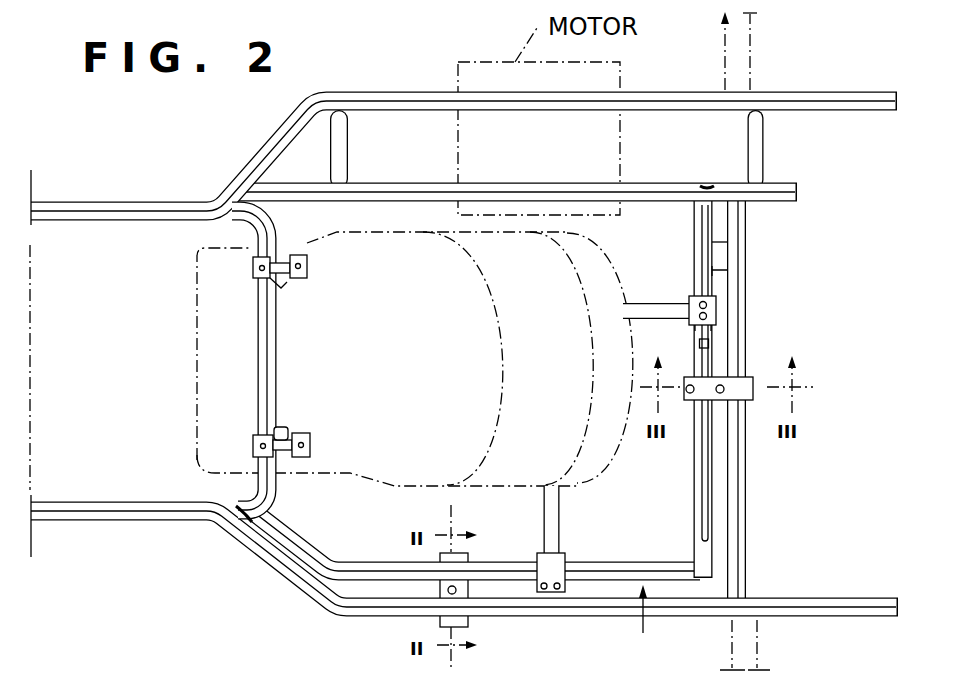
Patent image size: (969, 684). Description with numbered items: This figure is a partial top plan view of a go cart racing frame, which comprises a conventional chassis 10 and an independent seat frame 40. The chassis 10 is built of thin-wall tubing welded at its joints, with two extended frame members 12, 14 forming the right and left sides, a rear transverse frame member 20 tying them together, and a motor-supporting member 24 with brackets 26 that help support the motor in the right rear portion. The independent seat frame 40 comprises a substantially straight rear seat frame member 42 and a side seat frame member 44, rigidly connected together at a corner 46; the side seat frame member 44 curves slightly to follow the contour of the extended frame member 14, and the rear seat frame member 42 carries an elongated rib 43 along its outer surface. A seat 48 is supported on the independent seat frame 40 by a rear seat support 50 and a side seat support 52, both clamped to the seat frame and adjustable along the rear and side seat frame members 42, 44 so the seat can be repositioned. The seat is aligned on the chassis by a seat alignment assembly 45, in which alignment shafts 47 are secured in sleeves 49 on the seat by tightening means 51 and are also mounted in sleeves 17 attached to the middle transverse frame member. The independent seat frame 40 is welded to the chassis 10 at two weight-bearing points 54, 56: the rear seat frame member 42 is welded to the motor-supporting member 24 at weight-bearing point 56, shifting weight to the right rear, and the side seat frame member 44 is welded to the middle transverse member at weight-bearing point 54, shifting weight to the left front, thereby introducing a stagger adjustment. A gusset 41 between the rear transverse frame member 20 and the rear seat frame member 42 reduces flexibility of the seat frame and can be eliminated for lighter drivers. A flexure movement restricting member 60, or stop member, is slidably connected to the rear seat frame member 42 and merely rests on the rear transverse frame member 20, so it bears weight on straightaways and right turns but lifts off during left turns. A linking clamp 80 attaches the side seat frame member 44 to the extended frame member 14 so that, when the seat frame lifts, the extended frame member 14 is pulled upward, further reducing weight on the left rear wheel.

The chassis 10 is at (464, 364).
The extended frame member 12 is at (142, 172).
The extended frame member 14 is at (397, 614).
The sleeves 17 is at (253, 266).
The rear transverse frame member 20 is at (747, 557).
The motor-supporting member 24 is at (428, 183).
The brackets 26 is at (350, 124).
The independent seat frame 40 is at (656, 629).
The gusset 41 is at (732, 274).
The rear seat frame member 42 is at (752, 381).
The elongated rib 43 is at (710, 350).
The side seat frame member 44 is at (585, 567).
The seat alignment assembly 45 is at (312, 289).
The corner 46 is at (693, 570).
The alignment shafts 47 is at (265, 281).
The seat 48 is at (467, 358).
The sleeves 49 is at (307, 262).
The rear seat support 50 is at (677, 288).
The tightening means 51 is at (296, 255).
The side seat support 52 is at (540, 593).
The weight-bearing point 54 is at (240, 540).
The weight-bearing point 56 is at (727, 165).
The flexure movement restricting member 60 is at (755, 399).
The linking clamp 80 is at (454, 567).